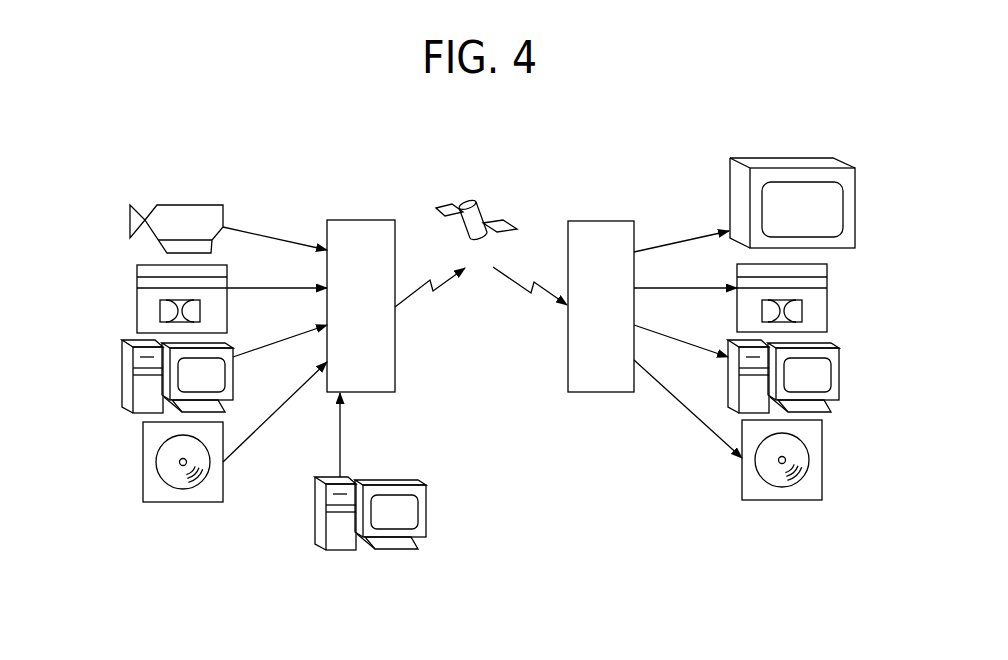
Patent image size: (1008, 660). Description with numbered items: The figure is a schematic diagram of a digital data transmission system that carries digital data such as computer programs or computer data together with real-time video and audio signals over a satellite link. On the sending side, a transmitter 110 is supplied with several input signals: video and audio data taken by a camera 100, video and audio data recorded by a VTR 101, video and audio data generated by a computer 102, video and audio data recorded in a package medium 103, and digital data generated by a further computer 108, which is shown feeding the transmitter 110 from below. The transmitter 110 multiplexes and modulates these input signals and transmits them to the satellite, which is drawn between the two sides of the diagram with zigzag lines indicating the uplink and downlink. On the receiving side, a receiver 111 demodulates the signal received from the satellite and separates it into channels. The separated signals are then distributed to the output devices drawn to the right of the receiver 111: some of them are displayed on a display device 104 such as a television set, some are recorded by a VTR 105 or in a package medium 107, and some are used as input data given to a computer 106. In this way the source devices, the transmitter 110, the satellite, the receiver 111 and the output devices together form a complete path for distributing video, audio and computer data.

The camera 100 is at (227, 185).
The VTR 101 is at (137, 298).
The computer 102 is at (122, 368).
The package medium 103 is at (143, 458).
The display device 104 is at (785, 155).
The VTR 105 is at (827, 293).
The computer 106 is at (842, 368).
The package medium 107 is at (822, 457).
The computer 108 is at (428, 507).
The transmitter 110 is at (373, 395).
The receiver 111 is at (588, 393).